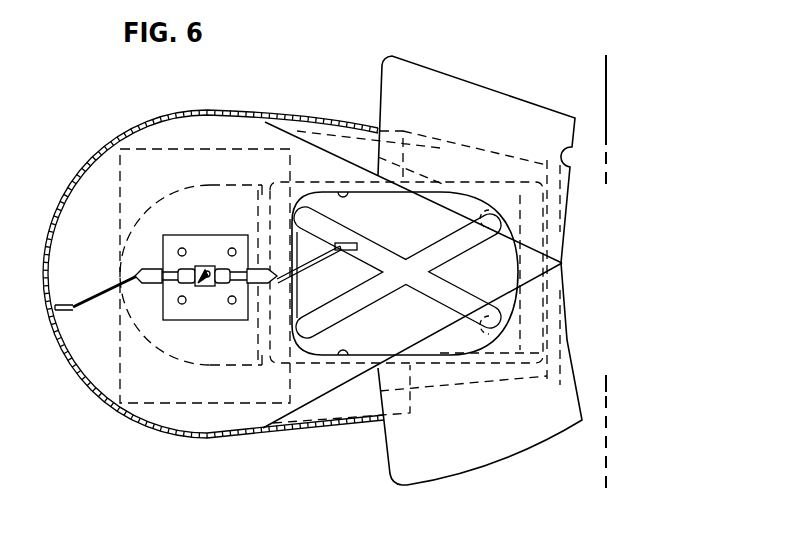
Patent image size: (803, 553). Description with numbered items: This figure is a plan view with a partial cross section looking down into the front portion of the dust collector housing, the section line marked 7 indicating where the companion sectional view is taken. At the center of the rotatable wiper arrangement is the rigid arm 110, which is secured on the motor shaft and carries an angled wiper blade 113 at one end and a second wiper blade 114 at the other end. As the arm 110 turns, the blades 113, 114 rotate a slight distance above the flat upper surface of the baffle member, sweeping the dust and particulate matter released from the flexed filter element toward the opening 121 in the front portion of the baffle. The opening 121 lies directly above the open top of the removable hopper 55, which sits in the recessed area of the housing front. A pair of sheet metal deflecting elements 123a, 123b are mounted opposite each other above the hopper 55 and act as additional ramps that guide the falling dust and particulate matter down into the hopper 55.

The section line 7- 7 is at (622, 465).
The hopper 55 is at (537, 347).
The rigid arm 110 is at (208, 266).
The wiper blade 113 is at (88, 309).
The wiper blade 114 is at (345, 244).
The opening 121 is at (478, 281).
The deflecting element 123a is at (470, 462).
The deflecting element 123b is at (460, 77).